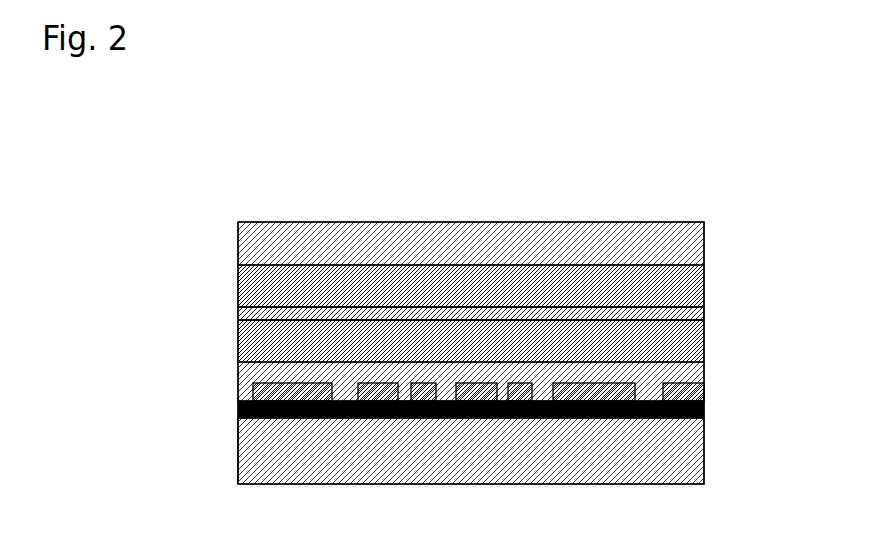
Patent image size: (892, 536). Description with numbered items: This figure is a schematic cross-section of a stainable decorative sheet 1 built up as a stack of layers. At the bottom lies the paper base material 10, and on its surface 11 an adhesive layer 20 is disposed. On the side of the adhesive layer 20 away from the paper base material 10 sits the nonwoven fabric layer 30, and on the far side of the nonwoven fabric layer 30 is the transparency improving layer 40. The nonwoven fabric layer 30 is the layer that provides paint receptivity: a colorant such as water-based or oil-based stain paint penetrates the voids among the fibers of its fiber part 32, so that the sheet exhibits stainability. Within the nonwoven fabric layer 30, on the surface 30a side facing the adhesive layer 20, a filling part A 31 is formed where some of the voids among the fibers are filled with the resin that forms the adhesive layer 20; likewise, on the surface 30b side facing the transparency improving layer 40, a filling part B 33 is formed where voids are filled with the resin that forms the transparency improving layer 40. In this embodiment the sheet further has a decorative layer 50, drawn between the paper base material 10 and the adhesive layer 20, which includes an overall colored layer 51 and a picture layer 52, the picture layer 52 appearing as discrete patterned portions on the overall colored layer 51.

The stainable decorative sheet 1 is at (700, 147).
The paper base material 10 is at (704, 455).
The surface of the paper base material 11 is at (238, 437).
The adhesive layer 20 is at (704, 373).
The nonwoven fabric layer 30 is at (534, 313).
The surface of the nonwoven fabric layer on the adhesive layer side 30a is at (238, 342).
The surface of the nonwoven fabric layer on the transparency improving layer side 30b is at (238, 283).
The filling part A 31 is at (704, 343).
The fiber part 32 is at (704, 316).
The filling part B 33 is at (704, 285).
The transparency improving layer 40 is at (704, 240).
The decorative layer 50 is at (534, 402).
The overall colored layer 51 is at (704, 410).
The picture layer 52 is at (704, 393).